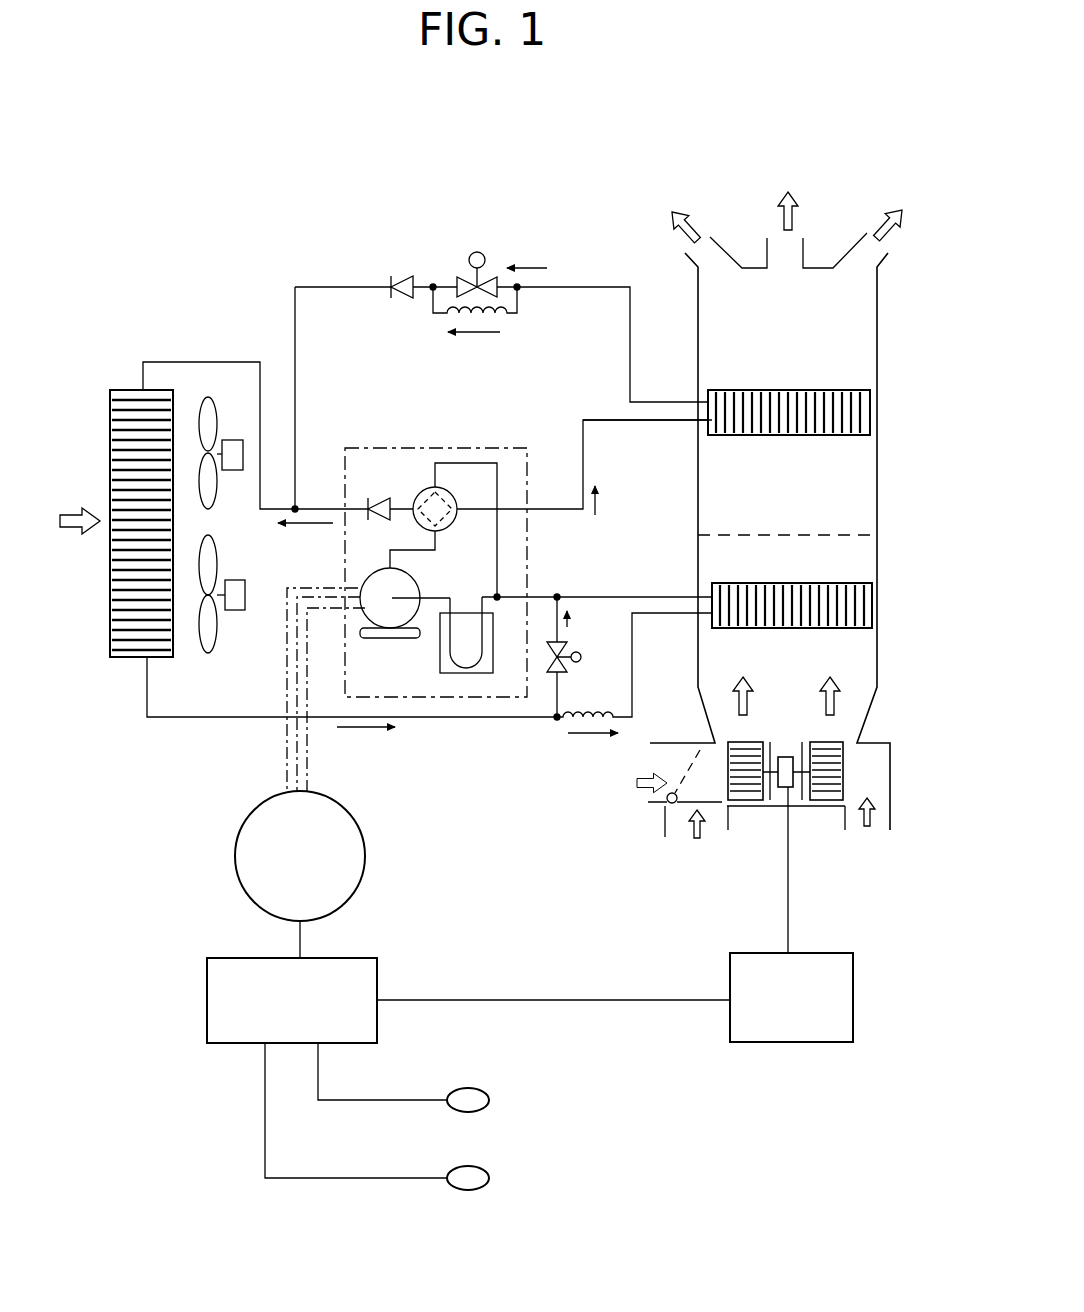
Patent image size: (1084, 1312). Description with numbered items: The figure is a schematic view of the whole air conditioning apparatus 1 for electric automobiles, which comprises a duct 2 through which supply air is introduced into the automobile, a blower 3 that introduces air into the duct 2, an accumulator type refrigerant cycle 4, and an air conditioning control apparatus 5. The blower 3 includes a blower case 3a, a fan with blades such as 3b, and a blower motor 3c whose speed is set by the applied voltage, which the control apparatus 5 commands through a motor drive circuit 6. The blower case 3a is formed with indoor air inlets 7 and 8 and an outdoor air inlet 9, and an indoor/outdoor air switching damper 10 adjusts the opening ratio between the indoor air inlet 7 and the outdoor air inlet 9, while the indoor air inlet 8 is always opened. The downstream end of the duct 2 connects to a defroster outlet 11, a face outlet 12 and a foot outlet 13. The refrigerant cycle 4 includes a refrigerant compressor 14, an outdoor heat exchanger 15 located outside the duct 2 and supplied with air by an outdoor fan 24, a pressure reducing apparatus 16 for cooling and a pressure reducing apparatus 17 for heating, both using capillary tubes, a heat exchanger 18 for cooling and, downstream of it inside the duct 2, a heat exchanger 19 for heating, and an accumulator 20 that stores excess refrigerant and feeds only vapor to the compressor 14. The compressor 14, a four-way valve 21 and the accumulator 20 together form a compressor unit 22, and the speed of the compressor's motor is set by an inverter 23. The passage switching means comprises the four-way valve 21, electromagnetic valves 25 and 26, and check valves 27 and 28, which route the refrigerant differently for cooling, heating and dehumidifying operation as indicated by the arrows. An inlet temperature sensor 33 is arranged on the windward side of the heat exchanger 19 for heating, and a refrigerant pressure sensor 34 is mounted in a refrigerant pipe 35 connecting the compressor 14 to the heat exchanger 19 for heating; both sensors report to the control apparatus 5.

The air conditioning apparatus 1 is at (584, 218).
The duct 2 is at (880, 320).
The blower 3 is at (768, 822).
The blower case 3a is at (816, 810).
The fan blade 3b is at (845, 772).
The blower motor 3c is at (790, 757).
The refrigerant cycle 4 is at (229, 358).
The air conditioning control apparatus 5 is at (380, 976).
The motor drive circuit 6 is at (855, 996).
The indoor air inlet 7 is at (672, 822).
The indoor air inlet 8 is at (850, 820).
The outdoor air inlet 9 is at (655, 758).
The indoor/outdoor air switching damper 10 is at (712, 810).
The defroster outlet 11 is at (705, 237).
The face outlet 12 is at (793, 248).
The foot outlet 13 is at (880, 258).
The refrigerant compressor 14 is at (394, 640).
The outdoor heat exchanger 15 is at (128, 389).
The pressure reducing apparatus for cooling 16 is at (622, 707).
The pressure reducing apparatus for heating 17 is at (450, 319).
The heat exchanger for cooling 18 is at (840, 630).
The heat exchanger for heating 19 is at (840, 437).
The accumulator 20 is at (470, 674).
The four-way valve 21 is at (429, 490).
The compressor unit 22 is at (462, 448).
The inverter 23 is at (362, 882).
The outdoor fan 24 is at (215, 645).
The electromagnetic valve 25 is at (582, 657).
The electromagnetic valve 26 is at (477, 252).
The check valve 27 is at (377, 497).
The check valve 28 is at (402, 275).
The inlet temperature sensor 33 is at (490, 1100).
The refrigerant pressure sensor 34 is at (490, 1178).
The refrigerant pipe 35 is at (645, 421).